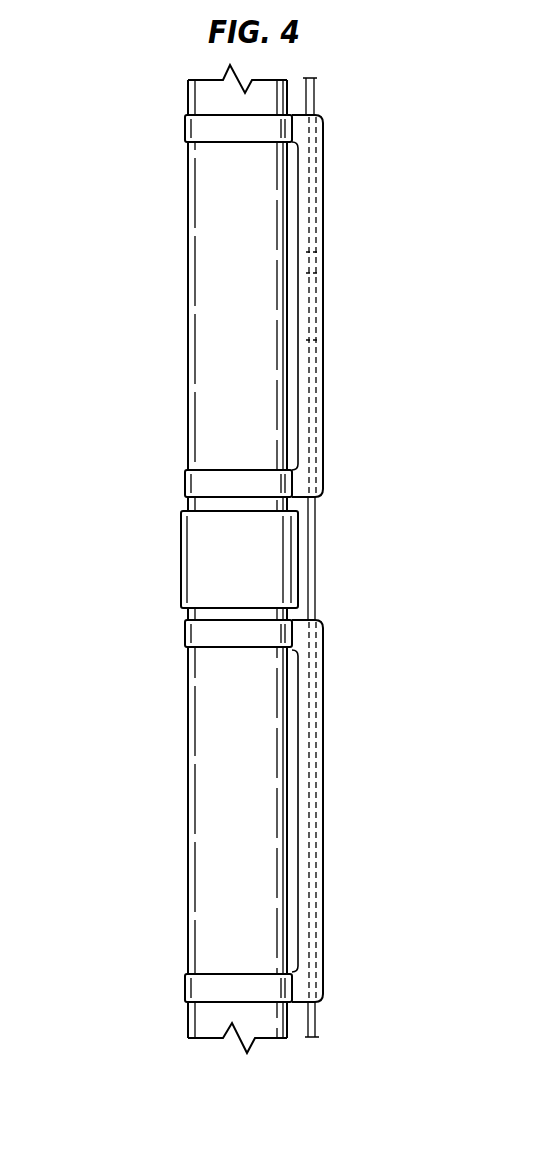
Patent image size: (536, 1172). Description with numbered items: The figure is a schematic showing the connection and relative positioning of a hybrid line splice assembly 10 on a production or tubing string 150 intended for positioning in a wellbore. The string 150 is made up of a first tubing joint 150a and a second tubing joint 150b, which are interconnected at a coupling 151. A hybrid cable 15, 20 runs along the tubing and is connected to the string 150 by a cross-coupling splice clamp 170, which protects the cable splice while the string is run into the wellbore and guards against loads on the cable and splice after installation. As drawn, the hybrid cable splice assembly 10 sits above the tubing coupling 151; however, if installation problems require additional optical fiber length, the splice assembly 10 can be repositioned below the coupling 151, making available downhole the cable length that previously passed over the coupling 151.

The hybrid line splice assembly 10 is at (340, 295).
The hybrid cable 15 is at (320, 102).
The hybrid cable 20 is at (316, 527).
The production or tubing string 150 is at (176, 189).
The first tubing joint 150a is at (188, 295).
The second tubing joint 150b is at (188, 820).
The coupling 151 is at (181, 560).
The cross-coupling splice clamp 170 is at (323, 157).